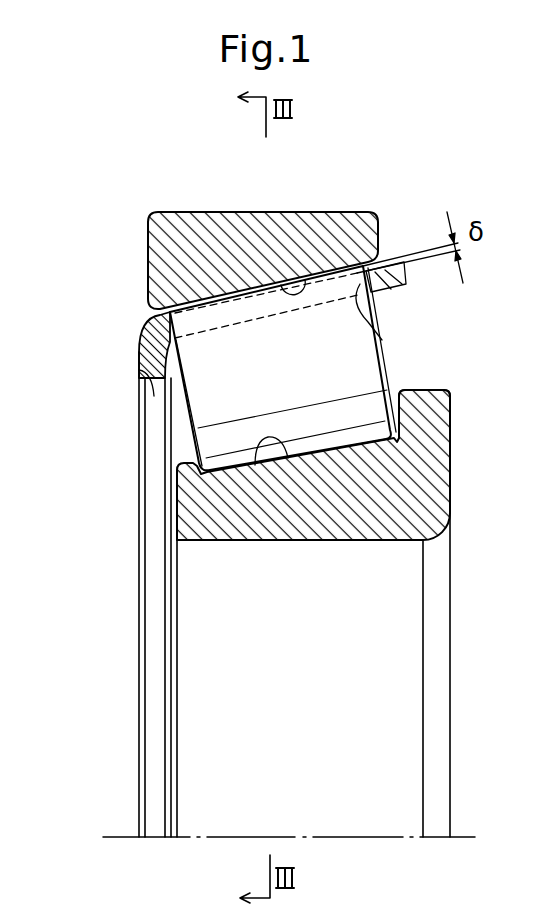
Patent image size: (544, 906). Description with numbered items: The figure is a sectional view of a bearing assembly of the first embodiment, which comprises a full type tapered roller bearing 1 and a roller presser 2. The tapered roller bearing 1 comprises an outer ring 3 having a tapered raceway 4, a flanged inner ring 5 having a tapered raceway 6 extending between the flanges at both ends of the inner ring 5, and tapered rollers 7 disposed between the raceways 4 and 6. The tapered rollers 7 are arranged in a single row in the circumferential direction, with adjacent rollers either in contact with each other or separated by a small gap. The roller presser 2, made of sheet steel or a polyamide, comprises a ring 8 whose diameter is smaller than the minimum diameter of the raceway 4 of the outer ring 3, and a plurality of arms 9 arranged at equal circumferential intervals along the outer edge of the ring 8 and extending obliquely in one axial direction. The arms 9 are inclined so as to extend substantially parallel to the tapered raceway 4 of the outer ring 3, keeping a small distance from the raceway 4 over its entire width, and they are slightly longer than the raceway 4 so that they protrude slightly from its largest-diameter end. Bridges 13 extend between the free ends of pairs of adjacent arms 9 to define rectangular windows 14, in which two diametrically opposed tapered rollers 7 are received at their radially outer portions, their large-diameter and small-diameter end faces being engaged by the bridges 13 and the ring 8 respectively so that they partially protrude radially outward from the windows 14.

The tapered roller bearing 1 is at (343, 206).
The roller presser 2 is at (132, 348).
The outer ring 3 is at (258, 242).
The tapered raceway 4 is at (299, 281).
The flanged inner ring 5 is at (348, 520).
The tapered raceway 6 is at (255, 465).
The tapered rollers 7 is at (328, 418).
The ring 8 is at (152, 370).
The arms 9 is at (226, 313).
The bridges 13 is at (387, 290).
The rectangular windows 14 is at (383, 326).